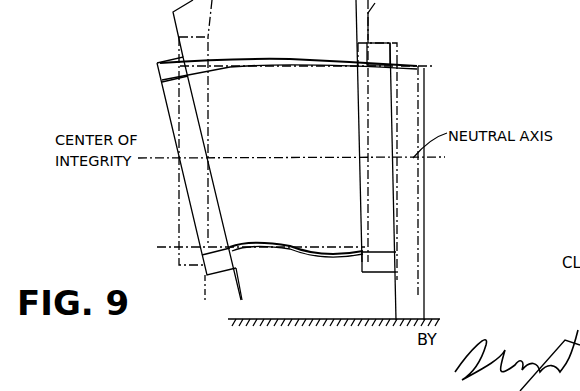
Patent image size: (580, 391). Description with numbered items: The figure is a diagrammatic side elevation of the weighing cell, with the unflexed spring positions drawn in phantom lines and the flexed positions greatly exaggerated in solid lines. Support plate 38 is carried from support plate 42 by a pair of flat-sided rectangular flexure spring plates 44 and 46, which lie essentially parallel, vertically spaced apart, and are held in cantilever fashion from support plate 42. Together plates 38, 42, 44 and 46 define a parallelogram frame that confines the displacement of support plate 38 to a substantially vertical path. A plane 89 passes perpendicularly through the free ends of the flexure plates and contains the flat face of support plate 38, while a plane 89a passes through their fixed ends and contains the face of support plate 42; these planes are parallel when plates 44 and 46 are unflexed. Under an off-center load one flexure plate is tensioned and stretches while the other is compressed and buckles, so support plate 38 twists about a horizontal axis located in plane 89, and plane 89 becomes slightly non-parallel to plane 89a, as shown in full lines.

The support plate 38 is at (162, 100).
The support plate 42 is at (398, 50).
The flexure spring plate 44 is at (214, 62).
The flexure spring plate 46 is at (338, 249).
The plane 89 is at (218, 299).
The plane 89a is at (366, 277).